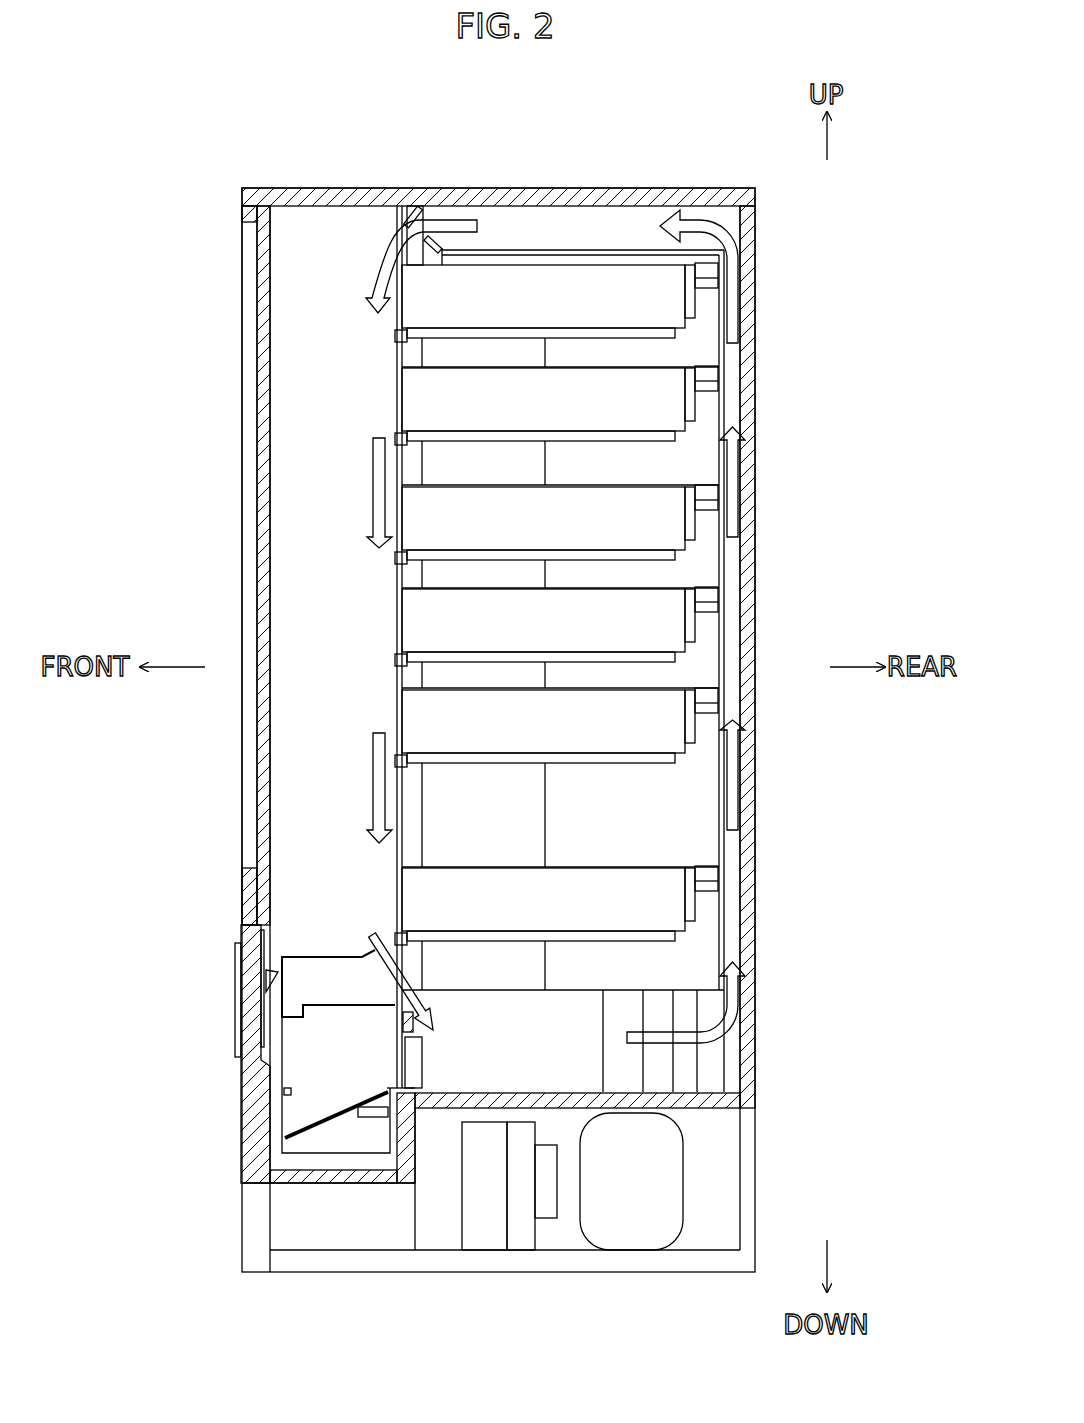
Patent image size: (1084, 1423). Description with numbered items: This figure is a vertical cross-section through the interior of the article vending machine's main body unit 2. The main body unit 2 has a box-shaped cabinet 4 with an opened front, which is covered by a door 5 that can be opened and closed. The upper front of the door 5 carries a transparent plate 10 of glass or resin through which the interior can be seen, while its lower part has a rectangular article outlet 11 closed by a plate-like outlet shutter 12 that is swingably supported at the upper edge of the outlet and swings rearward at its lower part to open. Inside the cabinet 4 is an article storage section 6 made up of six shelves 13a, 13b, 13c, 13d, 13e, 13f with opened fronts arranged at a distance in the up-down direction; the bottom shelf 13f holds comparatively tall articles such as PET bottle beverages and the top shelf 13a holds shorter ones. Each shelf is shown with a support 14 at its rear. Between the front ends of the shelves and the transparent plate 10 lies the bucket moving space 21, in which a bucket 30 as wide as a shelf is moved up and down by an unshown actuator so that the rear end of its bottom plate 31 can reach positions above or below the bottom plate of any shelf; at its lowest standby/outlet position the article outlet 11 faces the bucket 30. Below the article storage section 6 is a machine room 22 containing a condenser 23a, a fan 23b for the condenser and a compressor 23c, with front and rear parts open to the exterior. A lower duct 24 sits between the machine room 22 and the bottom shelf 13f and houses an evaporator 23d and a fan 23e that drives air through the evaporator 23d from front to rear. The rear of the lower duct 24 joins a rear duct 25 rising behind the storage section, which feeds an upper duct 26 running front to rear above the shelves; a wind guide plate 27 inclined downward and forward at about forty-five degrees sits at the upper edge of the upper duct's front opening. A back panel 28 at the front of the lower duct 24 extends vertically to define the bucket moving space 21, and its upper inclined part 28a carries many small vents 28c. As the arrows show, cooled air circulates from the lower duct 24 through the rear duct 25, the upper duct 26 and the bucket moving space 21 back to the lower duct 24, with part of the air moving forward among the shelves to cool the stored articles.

The main body unit 2 is at (736, 186).
The cabinet 4 is at (484, 188).
The door 5 is at (246, 190).
The article storage section 6 is at (700, 565).
The transparent plate 10 is at (262, 318).
The article outlet 11 is at (265, 1073).
The outlet shutter 12 is at (262, 978).
The shelf 13a is at (657, 297).
The shelf 13b is at (657, 398).
The shelf 13c is at (657, 520).
The shelf 13d is at (657, 620).
The shelf 13e is at (657, 722).
The shelf 13f is at (657, 897).
The drawer support 14 is at (712, 375).
The bucket moving space 21 is at (318, 378).
The machine room 22 is at (725, 1157).
The condenser 23a is at (482, 1232).
The fan for the condenser 23b is at (545, 1210).
The compressor 23c is at (630, 1232).
The evaporator 23d is at (645, 1007).
The fan for the evaporator 23e is at (690, 1055).
The lower duct 24 is at (530, 1060).
The rear duct 25 is at (736, 848).
The upper duct 26 is at (536, 236).
The wind guide plate 27 is at (406, 206).
The back panel 28 is at (390, 1040).
The inclined part 28a is at (397, 992).
The vents 28c is at (385, 955).
The bucket 30 is at (327, 1053).
The bottom plate 31 is at (320, 1128).